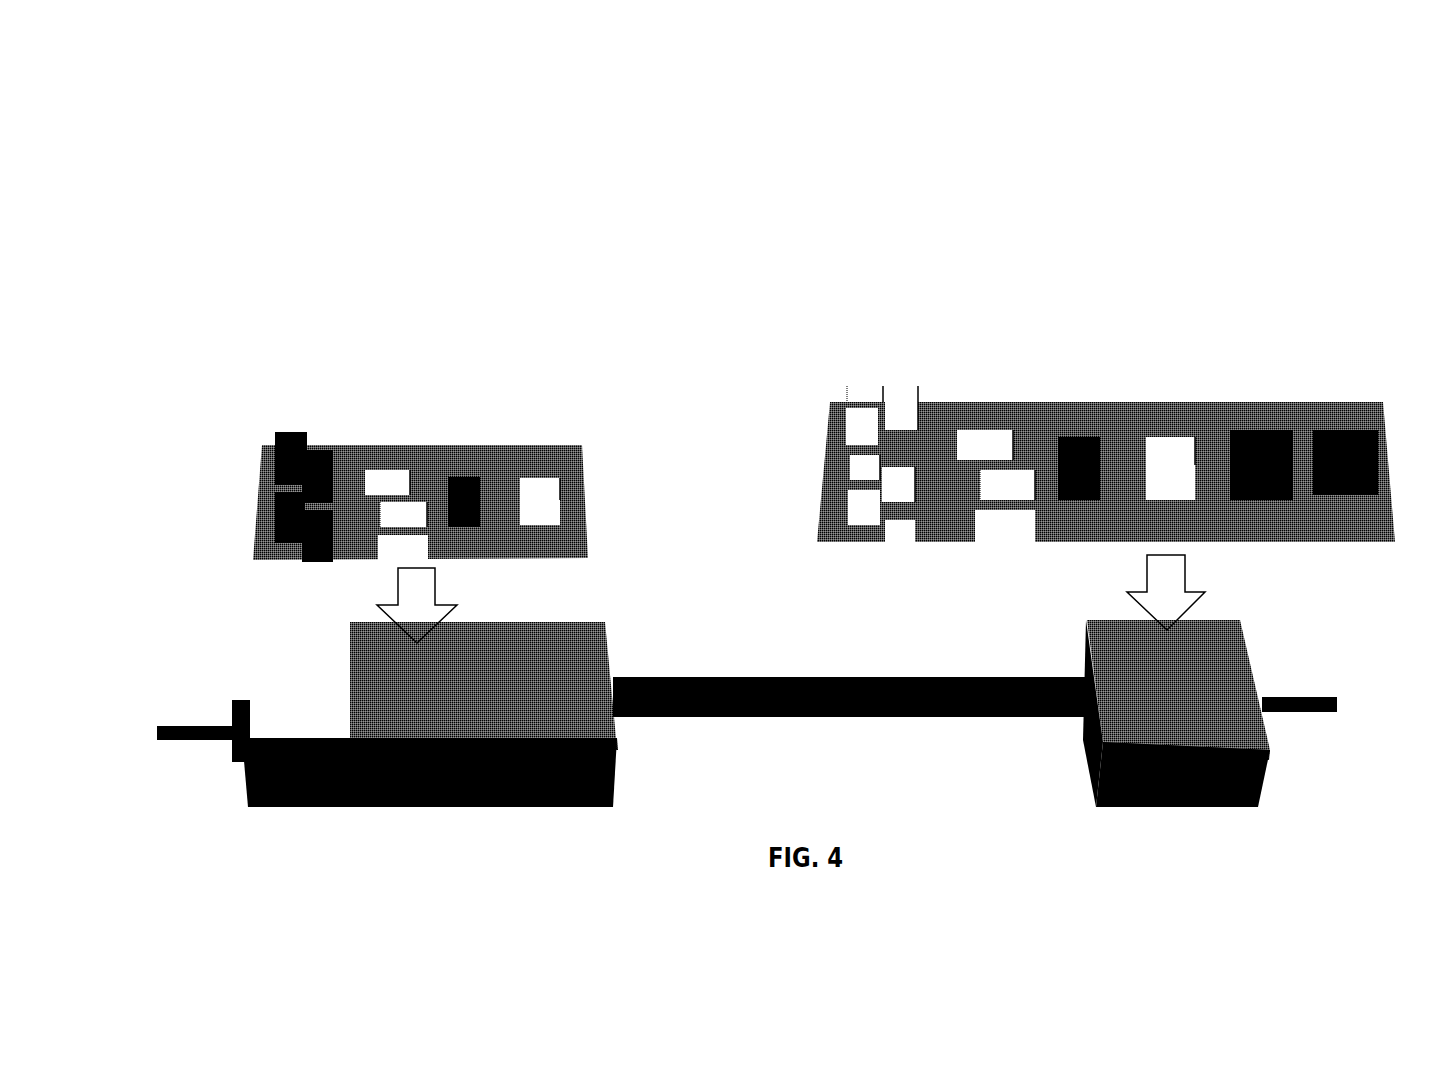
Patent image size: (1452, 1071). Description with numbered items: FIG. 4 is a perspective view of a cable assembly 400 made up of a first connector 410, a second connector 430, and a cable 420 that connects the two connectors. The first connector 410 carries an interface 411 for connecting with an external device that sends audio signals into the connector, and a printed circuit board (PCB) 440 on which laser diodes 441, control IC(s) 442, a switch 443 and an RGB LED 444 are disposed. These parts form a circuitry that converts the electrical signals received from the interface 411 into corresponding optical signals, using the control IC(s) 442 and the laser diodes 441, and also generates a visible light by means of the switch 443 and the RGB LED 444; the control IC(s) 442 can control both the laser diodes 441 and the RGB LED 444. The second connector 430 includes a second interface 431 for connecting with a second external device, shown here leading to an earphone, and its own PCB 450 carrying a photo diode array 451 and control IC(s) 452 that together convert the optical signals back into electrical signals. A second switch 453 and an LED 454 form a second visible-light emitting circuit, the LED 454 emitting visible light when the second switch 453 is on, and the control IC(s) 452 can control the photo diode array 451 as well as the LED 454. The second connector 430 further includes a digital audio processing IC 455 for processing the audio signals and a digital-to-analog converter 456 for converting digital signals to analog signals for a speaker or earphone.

The cable assembly 400 is at (1438, 87).
The first connector 410 is at (403, 854).
The interface 411 is at (228, 719).
The cable 420 is at (800, 661).
The second connector 430 is at (1190, 852).
The second interface 431 is at (1302, 694).
The printed circuit board 440 is at (571, 593).
The laser diodes 441 is at (312, 308).
The control IC(s) 442 is at (415, 357).
The switch 443 is at (486, 392).
The RGB LED 444 is at (568, 366).
The PCB 450 is at (1390, 582).
The photo diode array 451 is at (892, 277).
The control IC(s) 452 is at (995, 311).
The second switch 453 is at (1093, 342).
The LED 454 is at (1180, 304).
The digital audio processing IC 455 is at (1262, 246).
The digital-to-analog converter 456 is at (1383, 282).